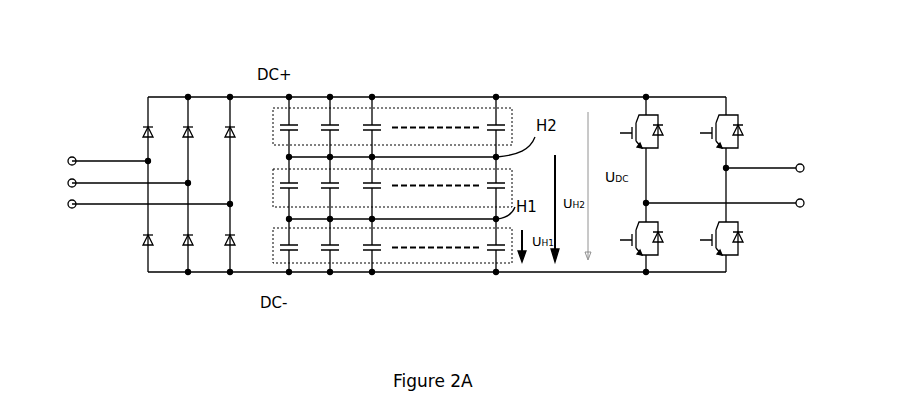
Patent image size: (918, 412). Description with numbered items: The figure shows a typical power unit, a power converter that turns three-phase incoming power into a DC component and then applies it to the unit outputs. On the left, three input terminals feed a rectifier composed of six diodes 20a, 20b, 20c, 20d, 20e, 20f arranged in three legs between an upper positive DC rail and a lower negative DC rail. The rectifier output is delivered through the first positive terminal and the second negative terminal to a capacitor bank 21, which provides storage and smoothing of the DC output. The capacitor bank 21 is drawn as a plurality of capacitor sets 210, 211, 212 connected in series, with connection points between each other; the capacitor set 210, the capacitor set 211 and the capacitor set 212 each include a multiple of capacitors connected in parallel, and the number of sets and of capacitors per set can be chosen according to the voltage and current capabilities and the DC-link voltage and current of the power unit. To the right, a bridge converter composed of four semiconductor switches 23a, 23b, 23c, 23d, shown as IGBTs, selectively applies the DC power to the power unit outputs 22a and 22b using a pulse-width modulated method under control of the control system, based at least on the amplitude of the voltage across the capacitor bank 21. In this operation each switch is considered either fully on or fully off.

The diode 20a is at (130, 122).
The diode 20b is at (133, 251).
The diode 20c is at (175, 122).
The diode 20d is at (175, 251).
The diode 20e is at (216, 121).
The diode 20f is at (219, 253).
The capacitor bank 21 is at (417, 242).
The capacitor set 210 is at (273, 146).
The capacitor set 211 is at (273, 207).
The capacitor set 212 is at (276, 229).
The power unit output 22a is at (766, 153).
The power unit output 22b is at (727, 219).
The semiconductor switch 23a is at (642, 111).
The semiconductor switch 23b is at (642, 264).
The semiconductor switch 23c is at (721, 111).
The semiconductor switch 23d is at (722, 264).